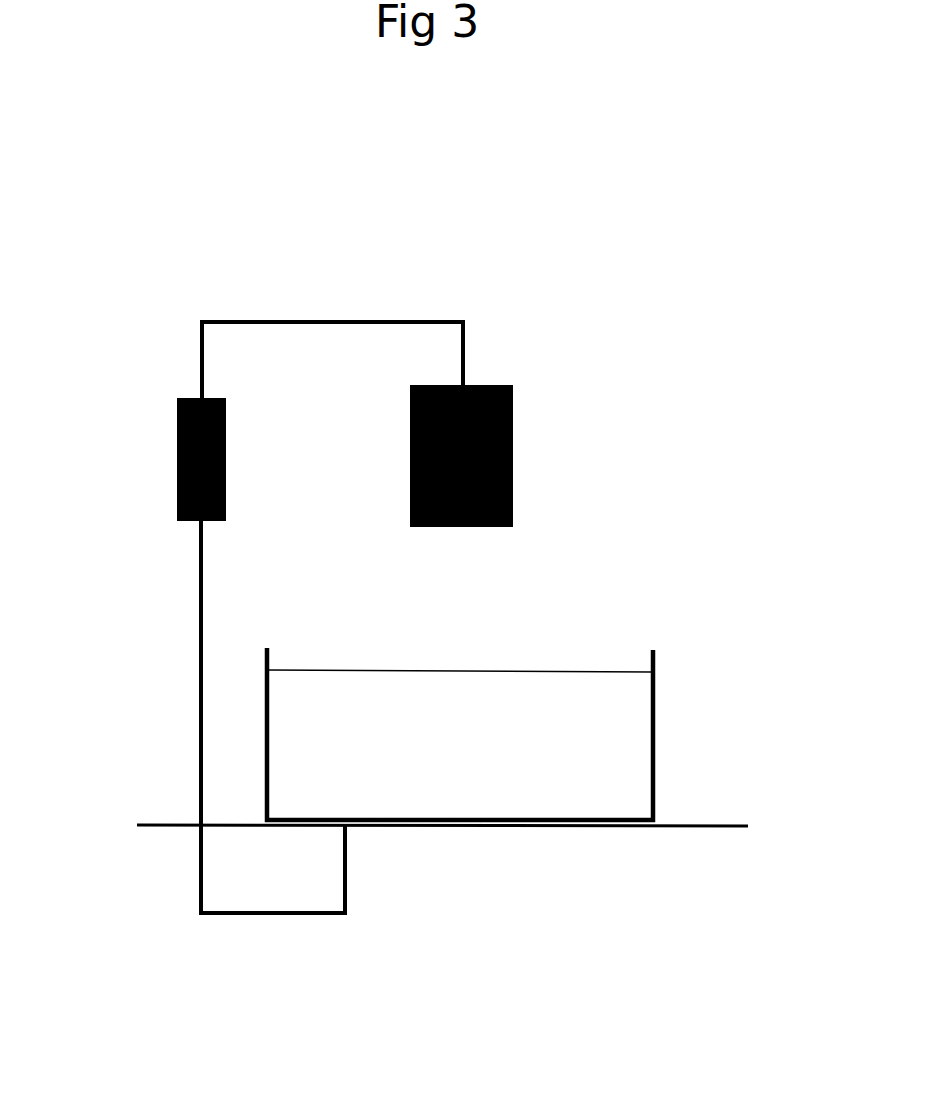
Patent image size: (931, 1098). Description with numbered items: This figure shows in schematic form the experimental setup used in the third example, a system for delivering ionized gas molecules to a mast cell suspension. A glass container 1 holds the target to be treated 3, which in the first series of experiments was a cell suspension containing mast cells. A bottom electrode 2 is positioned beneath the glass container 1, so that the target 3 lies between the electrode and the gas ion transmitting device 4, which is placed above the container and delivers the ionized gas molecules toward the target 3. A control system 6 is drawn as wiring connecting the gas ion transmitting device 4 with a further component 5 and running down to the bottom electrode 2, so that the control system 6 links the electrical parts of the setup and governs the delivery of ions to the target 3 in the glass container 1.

The glass container 1 is at (655, 683).
The bottom electrode 2 is at (505, 828).
The target to be treated 3 is at (497, 727).
The gas ion transmitting device 4 is at (495, 380).
The resistor 5 is at (162, 433).
The control system 6 is at (348, 318).